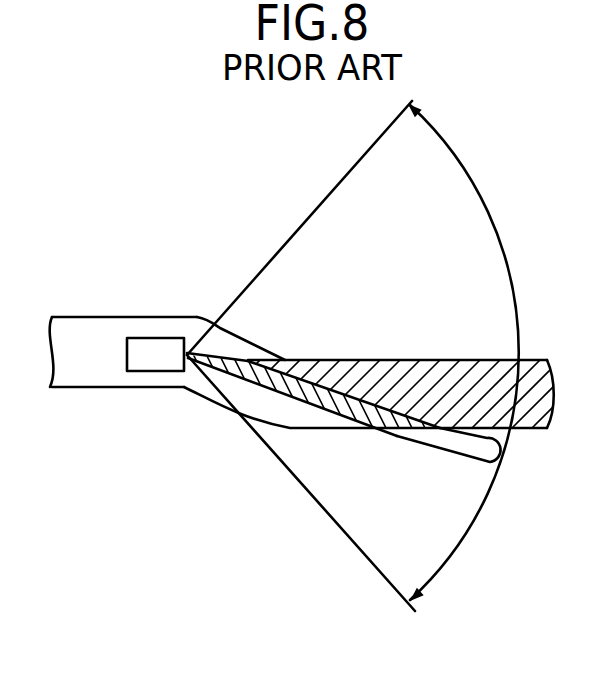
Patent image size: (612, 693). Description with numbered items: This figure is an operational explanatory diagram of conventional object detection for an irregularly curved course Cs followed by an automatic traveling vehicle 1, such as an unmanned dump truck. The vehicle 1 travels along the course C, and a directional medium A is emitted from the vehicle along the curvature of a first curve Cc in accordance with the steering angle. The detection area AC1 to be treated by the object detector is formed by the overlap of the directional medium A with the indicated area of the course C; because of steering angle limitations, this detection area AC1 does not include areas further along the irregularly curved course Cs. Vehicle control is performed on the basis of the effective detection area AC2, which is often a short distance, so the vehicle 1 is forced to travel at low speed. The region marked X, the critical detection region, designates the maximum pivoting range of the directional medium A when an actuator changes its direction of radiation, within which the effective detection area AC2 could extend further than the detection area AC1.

The vehicle 1 is at (149, 338).
The course C is at (87, 377).
The first curve Cc is at (225, 341).
The irregularly curved course Cs is at (260, 346).
The detection area AC1 is at (347, 428).
The effective detection area AC2 is at (418, 360).
The directional medium A is at (428, 452).
The critical detection region X is at (496, 236).